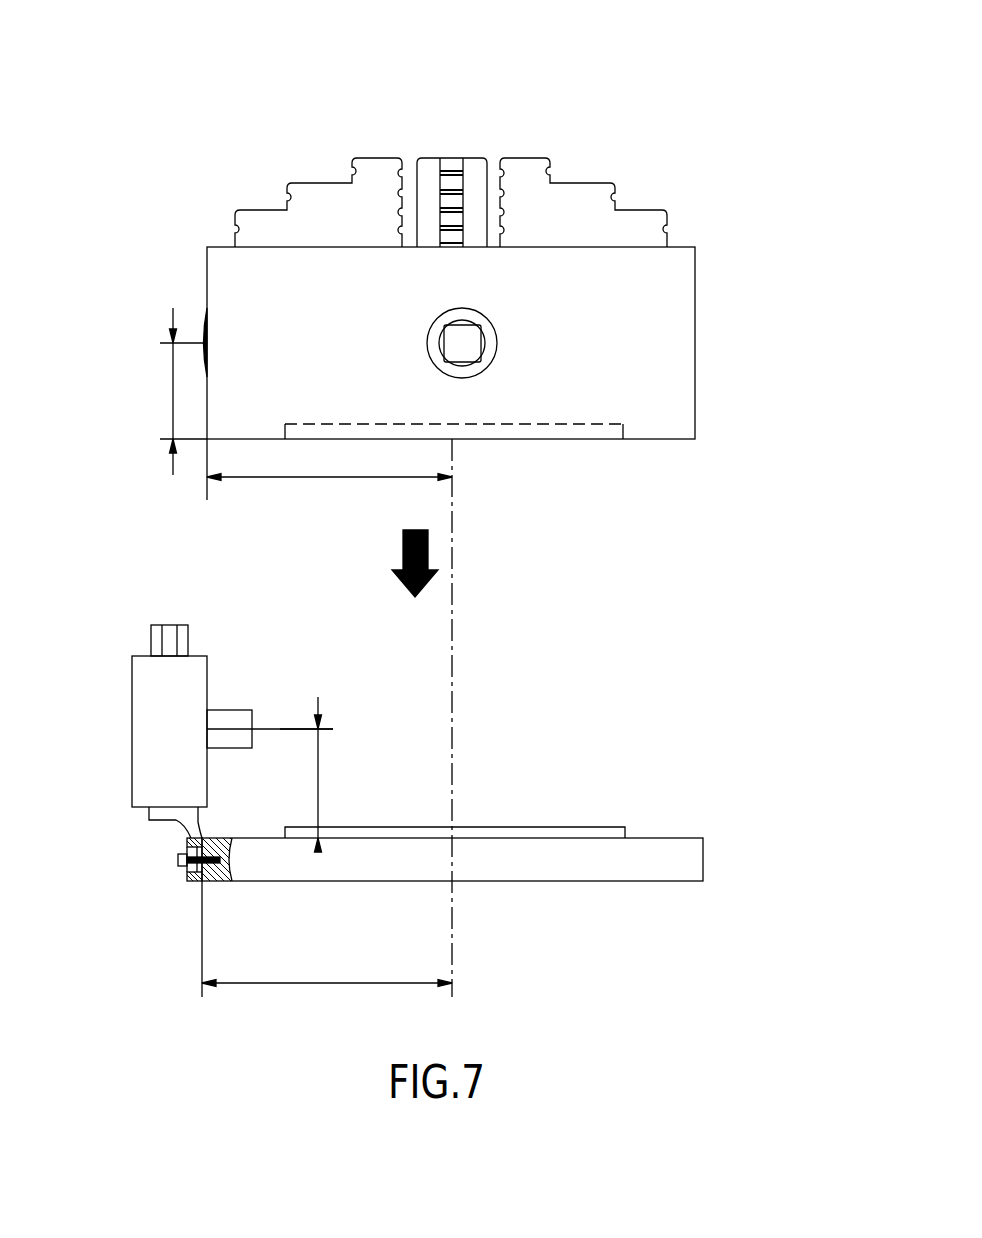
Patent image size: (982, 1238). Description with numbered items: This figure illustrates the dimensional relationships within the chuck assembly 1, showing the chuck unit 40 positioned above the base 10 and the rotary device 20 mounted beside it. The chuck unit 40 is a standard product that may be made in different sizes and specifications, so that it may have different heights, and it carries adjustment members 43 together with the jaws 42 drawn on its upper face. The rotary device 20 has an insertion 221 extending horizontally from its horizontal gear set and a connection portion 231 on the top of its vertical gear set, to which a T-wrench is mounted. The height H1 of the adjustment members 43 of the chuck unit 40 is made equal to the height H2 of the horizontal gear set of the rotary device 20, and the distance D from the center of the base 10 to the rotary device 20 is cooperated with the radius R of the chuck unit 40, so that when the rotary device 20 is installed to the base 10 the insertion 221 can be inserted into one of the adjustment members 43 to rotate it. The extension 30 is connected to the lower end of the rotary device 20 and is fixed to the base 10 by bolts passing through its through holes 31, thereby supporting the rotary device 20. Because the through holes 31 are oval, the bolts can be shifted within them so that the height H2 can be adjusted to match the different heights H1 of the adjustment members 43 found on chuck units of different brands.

The chuck assembly 1 is at (200, 140).
The base 10 is at (599, 882).
The rotary device 20 is at (176, 713).
The insertion 221 is at (228, 710).
The connection portion 231 is at (157, 638).
The extension 30 is at (141, 905).
The through holes 31 is at (197, 881).
The chuck unit 40 is at (697, 290).
The jaw 42 is at (527, 167).
The adjustment members 43 is at (207, 310).